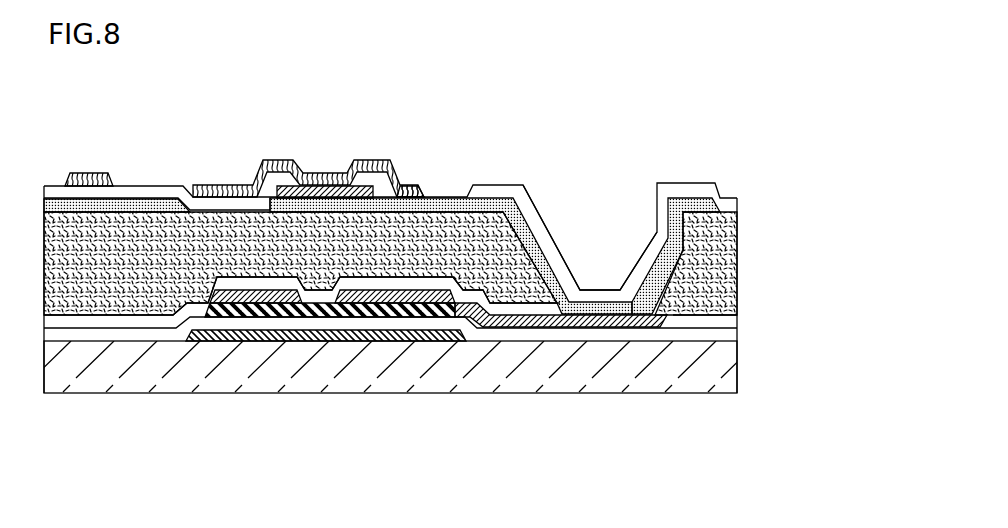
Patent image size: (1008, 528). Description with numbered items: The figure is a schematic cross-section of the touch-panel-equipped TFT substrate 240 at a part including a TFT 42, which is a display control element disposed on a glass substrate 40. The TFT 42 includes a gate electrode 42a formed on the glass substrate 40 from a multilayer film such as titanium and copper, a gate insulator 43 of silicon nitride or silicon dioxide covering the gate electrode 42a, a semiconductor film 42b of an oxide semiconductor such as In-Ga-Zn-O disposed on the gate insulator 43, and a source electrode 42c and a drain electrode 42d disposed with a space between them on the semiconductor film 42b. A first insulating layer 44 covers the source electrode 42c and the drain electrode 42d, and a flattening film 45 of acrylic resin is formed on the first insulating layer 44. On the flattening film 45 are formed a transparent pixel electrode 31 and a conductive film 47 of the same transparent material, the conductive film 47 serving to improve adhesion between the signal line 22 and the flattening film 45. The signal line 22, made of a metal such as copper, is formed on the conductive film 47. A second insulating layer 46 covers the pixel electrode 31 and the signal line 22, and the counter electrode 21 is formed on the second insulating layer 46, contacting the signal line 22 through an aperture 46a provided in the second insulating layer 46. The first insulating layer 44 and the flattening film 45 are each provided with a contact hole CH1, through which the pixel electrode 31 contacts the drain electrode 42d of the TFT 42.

The touch-panel-equipped TFT substrate 240 is at (744, 123).
The glass substrate 40 is at (730, 367).
The gate insulator 43 is at (727, 333).
The TFT 42 is at (337, 393).
The gate electrode 42a is at (395, 370).
The semiconductor film 42b is at (303, 305).
The source electrode 42c is at (245, 302).
The drain electrode 42d is at (420, 333).
The conductive film 47 is at (374, 180).
The first insulating layer 44 is at (725, 320).
The flattening film 45 is at (728, 266).
The pixel electrode 31 is at (690, 217).
The second insulating layer 46 is at (708, 194).
The signal line 22 is at (323, 188).
The aperture 46a is at (291, 162).
The counter electrode 21 is at (84, 172).
The contact hole CH1 is at (599, 208).